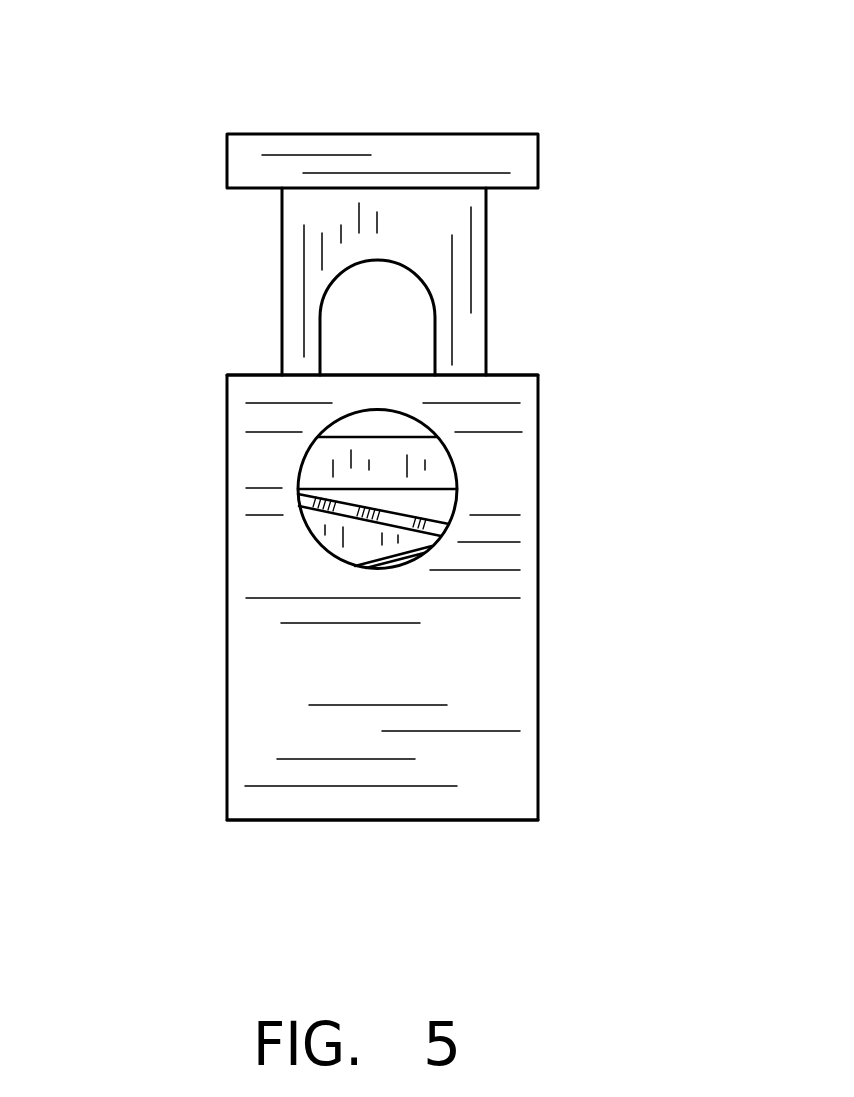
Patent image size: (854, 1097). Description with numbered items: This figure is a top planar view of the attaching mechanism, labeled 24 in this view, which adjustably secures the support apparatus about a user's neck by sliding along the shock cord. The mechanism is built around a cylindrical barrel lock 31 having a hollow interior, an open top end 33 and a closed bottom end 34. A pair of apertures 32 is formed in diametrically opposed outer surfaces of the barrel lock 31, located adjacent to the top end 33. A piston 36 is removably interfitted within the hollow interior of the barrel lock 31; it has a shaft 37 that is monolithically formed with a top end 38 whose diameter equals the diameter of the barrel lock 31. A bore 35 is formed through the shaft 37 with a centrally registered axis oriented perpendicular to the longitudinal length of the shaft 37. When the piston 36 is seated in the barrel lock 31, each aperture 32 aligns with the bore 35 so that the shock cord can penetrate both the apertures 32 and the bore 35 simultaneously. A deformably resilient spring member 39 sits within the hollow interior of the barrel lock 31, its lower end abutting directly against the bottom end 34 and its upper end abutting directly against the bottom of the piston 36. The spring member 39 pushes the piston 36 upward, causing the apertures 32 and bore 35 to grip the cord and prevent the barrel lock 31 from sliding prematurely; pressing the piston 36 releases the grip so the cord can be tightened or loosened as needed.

The anchor assembly 24 is at (100, 162).
The barrel lock 31 is at (473, 557).
The apertures 32 is at (303, 455).
The top end 33 is at (255, 390).
The bottom end 34 is at (243, 798).
The bore 35 is at (408, 330).
The piston 36 is at (382, 94).
The shaft 37 is at (420, 448).
The top end 38 is at (460, 150).
The spring member 39 is at (529, 481).